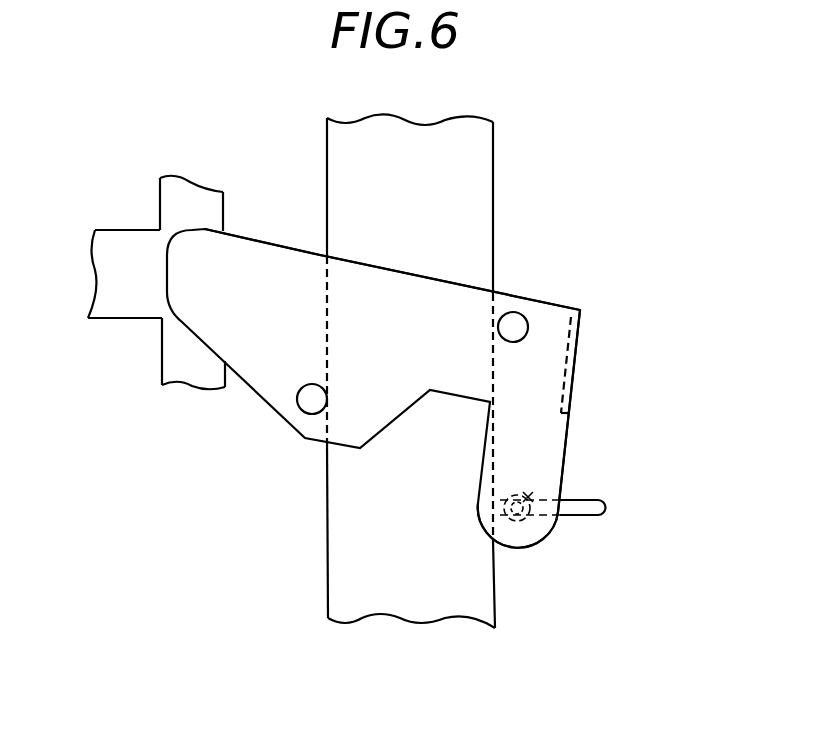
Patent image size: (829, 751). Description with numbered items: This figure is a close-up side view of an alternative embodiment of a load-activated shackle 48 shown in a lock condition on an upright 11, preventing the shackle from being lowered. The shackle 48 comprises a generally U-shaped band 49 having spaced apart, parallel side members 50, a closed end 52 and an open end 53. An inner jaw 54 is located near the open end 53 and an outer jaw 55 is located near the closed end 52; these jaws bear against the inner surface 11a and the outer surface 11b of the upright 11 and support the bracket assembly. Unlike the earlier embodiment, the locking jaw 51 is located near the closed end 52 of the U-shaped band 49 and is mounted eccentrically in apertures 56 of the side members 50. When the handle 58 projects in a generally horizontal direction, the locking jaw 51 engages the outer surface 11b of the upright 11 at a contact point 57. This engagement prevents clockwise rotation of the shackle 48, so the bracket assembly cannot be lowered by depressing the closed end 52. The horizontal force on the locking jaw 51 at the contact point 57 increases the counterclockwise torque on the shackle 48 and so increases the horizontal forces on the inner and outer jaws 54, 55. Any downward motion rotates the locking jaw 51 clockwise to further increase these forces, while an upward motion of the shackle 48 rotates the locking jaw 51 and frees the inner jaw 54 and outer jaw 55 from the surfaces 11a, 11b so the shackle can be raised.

The upright 11 is at (468, 158).
The inner surface of upright 11a is at (328, 542).
The outer surface of upright 11b is at (497, 565).
The load-activated shackle 48 is at (265, 176).
The U-shaped band 49 is at (448, 282).
The side members 50 is at (405, 288).
The locking jaw 51 is at (510, 490).
The closed end 52 is at (578, 358).
The open end 53 is at (165, 268).
The inner jaw 54 is at (302, 409).
The outer jaw 55 is at (522, 324).
The apertures 56 is at (536, 492).
The contact point 57 is at (477, 515).
The handle 58 is at (605, 505).